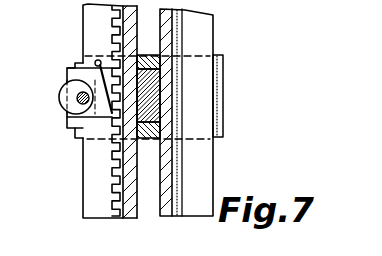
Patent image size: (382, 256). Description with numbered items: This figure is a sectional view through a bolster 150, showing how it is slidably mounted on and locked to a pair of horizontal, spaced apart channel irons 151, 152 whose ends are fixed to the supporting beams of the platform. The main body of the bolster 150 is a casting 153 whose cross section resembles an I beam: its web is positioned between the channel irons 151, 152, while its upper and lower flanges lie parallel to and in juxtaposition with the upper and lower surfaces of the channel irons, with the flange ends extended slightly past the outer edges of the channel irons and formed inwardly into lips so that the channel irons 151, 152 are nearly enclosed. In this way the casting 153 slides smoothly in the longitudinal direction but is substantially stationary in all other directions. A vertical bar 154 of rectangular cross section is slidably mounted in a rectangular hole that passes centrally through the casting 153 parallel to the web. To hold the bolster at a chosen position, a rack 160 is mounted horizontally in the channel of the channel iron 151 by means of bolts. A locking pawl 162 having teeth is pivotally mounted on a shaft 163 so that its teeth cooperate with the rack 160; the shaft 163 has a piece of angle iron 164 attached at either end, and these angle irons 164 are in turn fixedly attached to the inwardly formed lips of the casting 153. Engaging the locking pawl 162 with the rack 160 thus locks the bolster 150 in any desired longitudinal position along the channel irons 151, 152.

The bolster 150 is at (229, 77).
The channel iron 151 is at (83, 27).
The channel iron 152 is at (213, 23).
The casting 153 is at (223, 112).
The vertical bar 154 is at (153, 108).
The rack 160 is at (113, 220).
The locking pawl 162 is at (59, 97).
The shaft 163 is at (96, 64).
The angle iron 164 is at (66, 126).